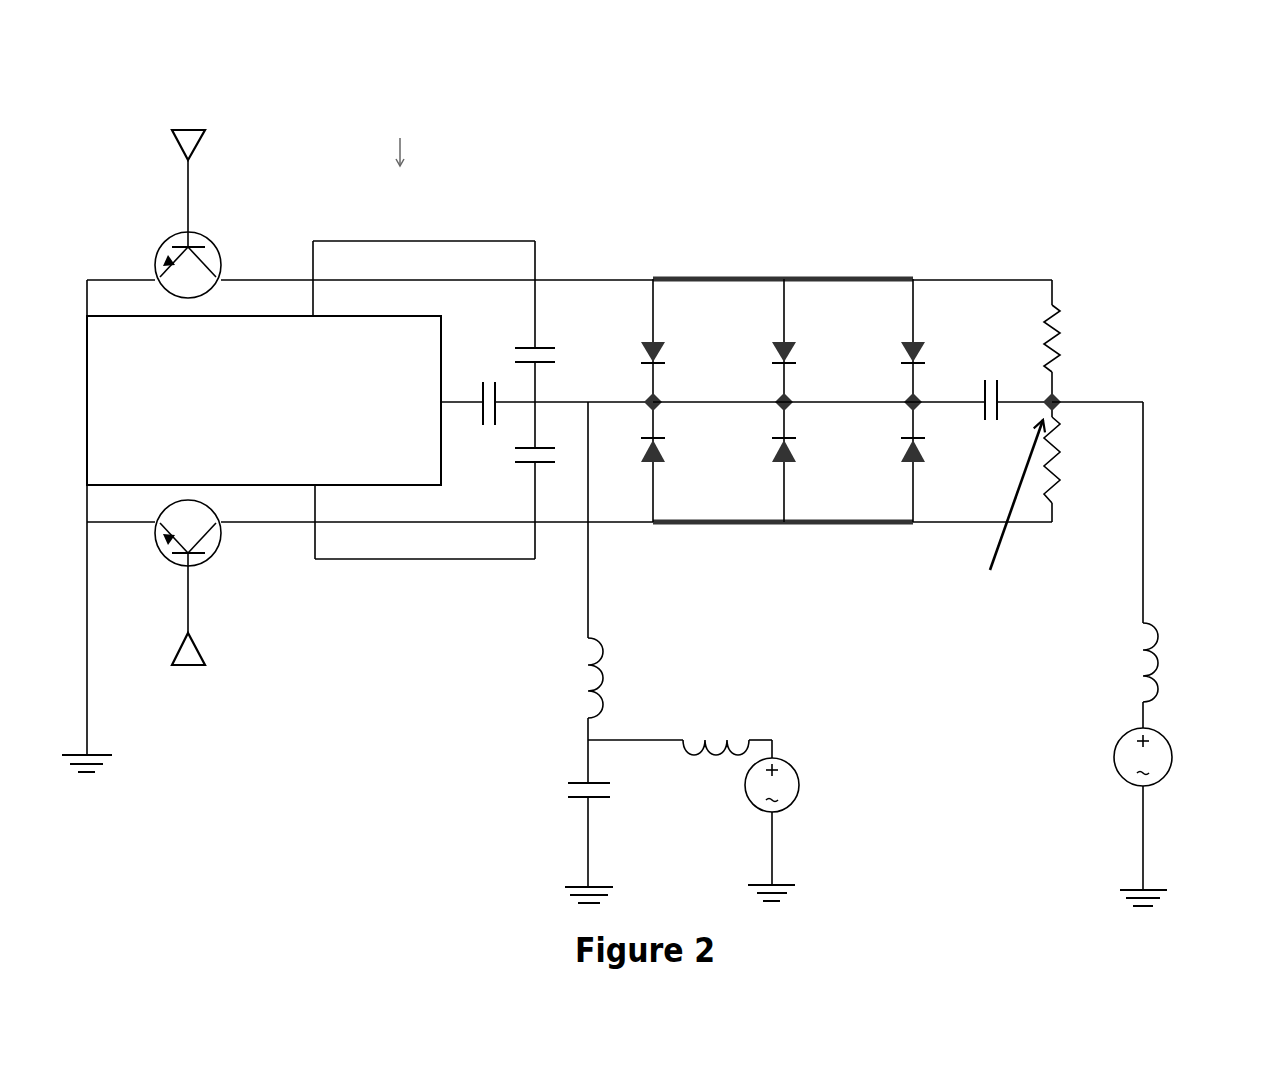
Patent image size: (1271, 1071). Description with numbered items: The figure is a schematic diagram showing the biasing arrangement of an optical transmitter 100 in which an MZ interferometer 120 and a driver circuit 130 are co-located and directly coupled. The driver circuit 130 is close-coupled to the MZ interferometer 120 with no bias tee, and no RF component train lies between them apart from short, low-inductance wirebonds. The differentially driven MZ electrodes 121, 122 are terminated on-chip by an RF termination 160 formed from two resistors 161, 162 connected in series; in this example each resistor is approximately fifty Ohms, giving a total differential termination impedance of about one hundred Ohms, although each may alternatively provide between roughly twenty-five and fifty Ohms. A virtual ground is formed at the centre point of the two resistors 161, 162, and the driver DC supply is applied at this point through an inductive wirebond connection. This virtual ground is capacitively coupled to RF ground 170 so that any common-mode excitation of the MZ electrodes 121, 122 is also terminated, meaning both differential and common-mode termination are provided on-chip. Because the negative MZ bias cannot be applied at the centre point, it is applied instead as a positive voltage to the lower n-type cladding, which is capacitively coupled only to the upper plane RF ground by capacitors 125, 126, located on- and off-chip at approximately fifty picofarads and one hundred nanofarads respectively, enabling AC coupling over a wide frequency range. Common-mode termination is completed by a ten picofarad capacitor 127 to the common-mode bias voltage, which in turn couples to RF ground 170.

The optical transmitter 100 is at (942, 797).
The MZ interferometer 120 is at (915, 167).
The MZ electrode 121 is at (727, 527).
The MZ electrode 122 is at (730, 278).
The capacitor 125 is at (493, 382).
The capacitor 126 is at (565, 773).
The capacitor 127 is at (978, 335).
The driver circuit 130 is at (140, 185).
The RF termination 160 is at (1177, 175).
The resistor 161 is at (1075, 472).
The resistor 162 is at (1075, 313).
The RF ground 170 is at (545, 898).